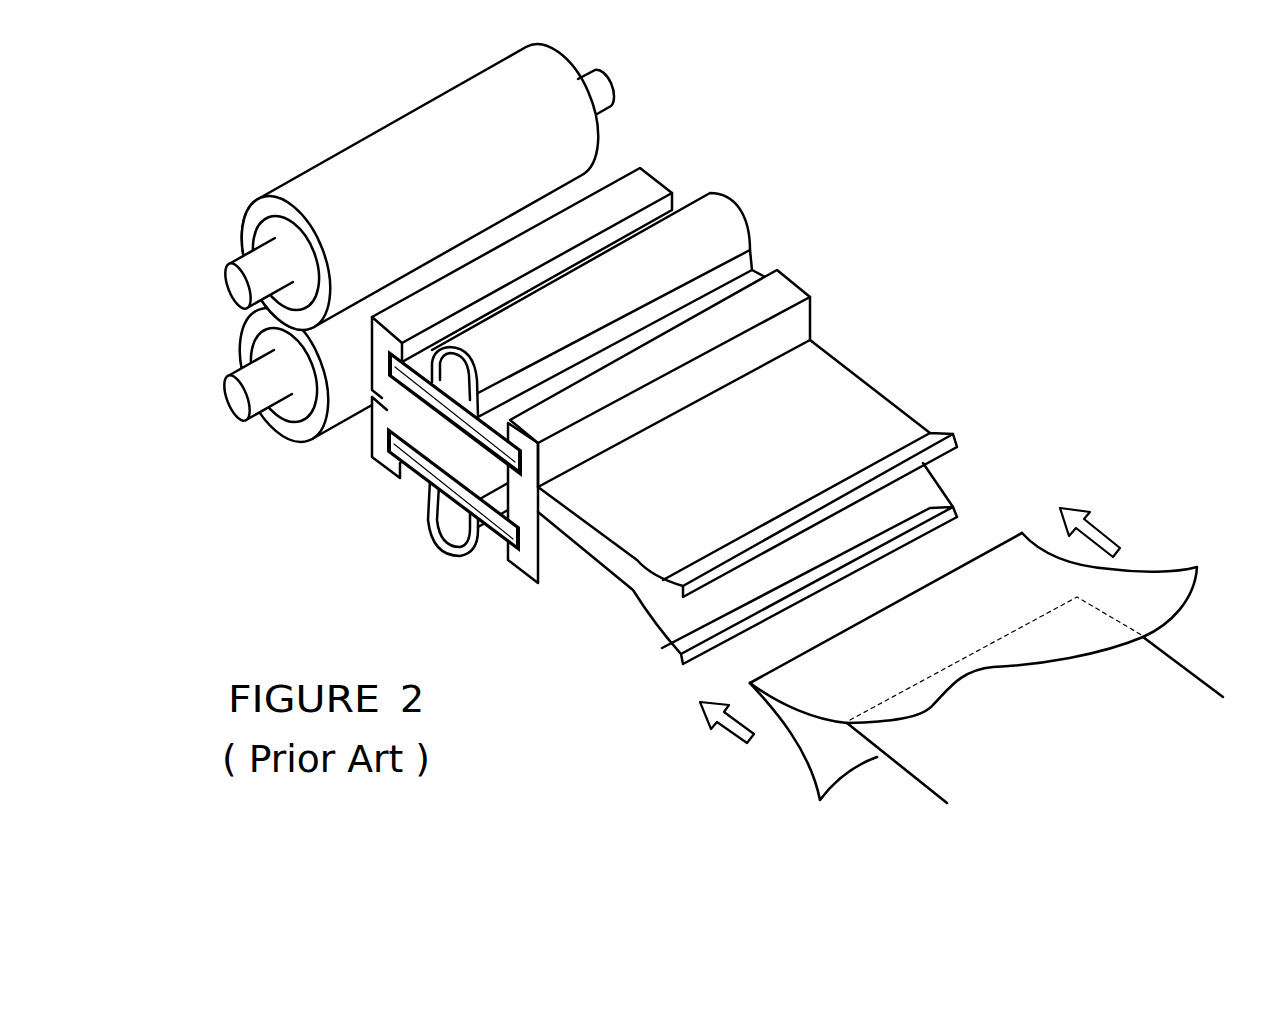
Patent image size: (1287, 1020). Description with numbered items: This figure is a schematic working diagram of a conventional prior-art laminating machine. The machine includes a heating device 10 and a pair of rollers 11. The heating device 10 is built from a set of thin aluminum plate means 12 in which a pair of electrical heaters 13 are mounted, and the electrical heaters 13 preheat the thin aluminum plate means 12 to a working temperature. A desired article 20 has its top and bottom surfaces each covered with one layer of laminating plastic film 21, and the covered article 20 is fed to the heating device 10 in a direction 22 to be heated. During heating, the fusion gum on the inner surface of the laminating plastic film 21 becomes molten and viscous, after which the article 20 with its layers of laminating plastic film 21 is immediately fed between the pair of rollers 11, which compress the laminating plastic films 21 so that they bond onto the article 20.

The heating device 10 is at (926, 265).
The pair of rollers 11 is at (296, 148).
The thin aluminum plate means 12 is at (836, 371).
The electrical heaters 13 is at (428, 417).
The desired article 20 is at (1076, 732).
The laminating plastic film 21 is at (1165, 583).
The direction 22 is at (733, 727).